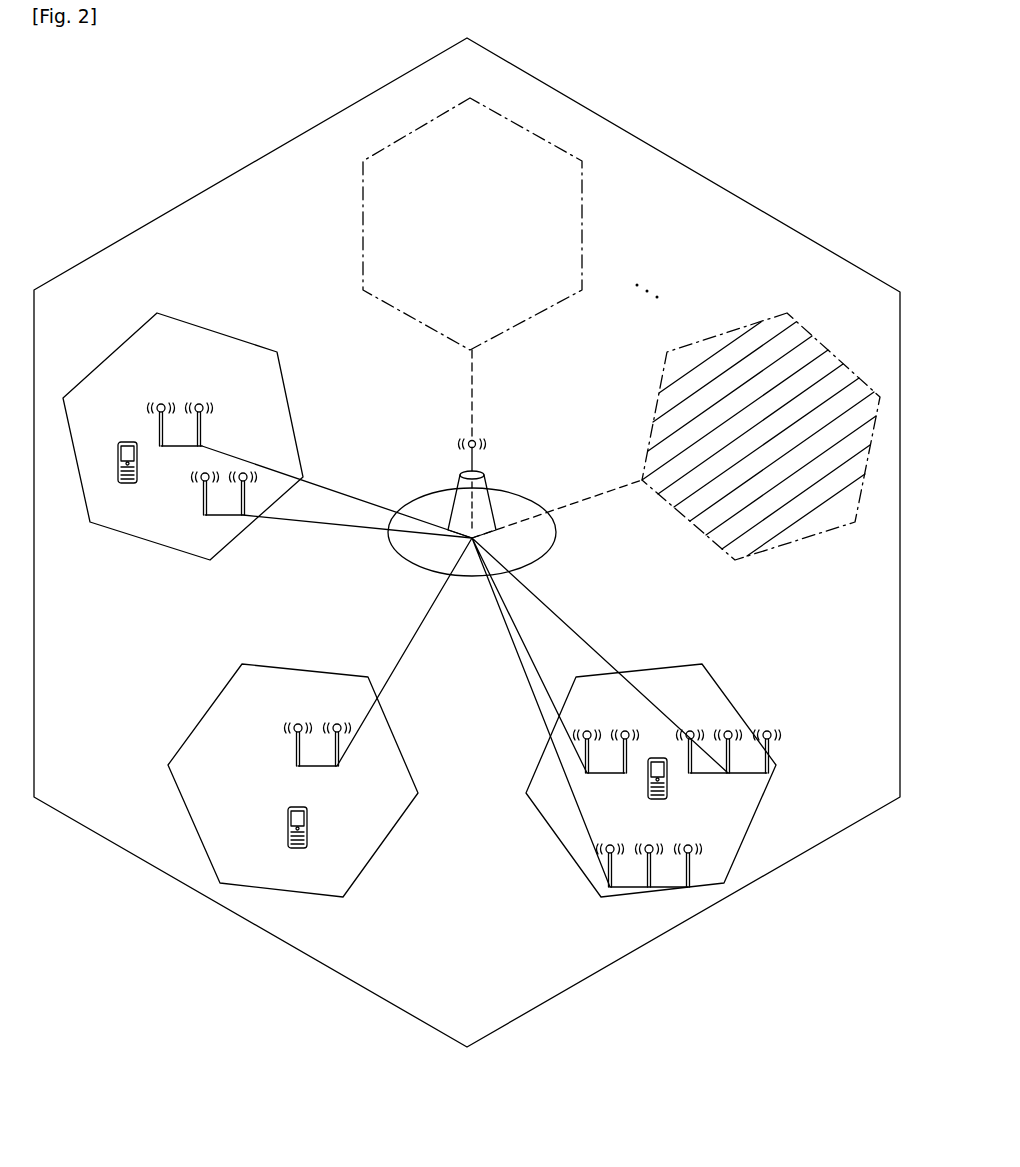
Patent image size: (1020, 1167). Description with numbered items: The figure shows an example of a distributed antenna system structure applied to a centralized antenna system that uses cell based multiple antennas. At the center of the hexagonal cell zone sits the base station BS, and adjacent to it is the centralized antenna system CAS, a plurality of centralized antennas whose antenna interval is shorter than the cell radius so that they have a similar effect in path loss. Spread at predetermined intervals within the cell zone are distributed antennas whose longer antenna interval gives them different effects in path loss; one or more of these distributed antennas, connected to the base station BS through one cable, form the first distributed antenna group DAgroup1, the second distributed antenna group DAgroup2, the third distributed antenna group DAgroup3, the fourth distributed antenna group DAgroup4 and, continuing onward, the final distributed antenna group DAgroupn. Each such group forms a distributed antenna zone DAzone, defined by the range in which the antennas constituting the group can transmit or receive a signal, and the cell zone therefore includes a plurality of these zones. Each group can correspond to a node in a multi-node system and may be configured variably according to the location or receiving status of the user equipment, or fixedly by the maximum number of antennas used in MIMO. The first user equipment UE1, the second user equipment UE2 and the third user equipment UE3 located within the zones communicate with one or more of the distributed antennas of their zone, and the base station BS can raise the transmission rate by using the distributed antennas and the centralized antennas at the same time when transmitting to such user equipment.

The base station BS is at (472, 488).
The centralized antenna system CAS is at (472, 532).
The user equipment UE1 is at (125, 477).
The user equipment UE2 is at (296, 842).
The user equipment UE3 is at (656, 793).
The DA group DAgroup1 is at (183, 436).
The DA group DAgroup2 is at (293, 780).
The DA group DAgroup3 is at (653, 780).
The DA group DAgroup4 is at (761, 436).
The DA group DAgroupn is at (472, 224).
The DA zone DAzone is at (753, 553).